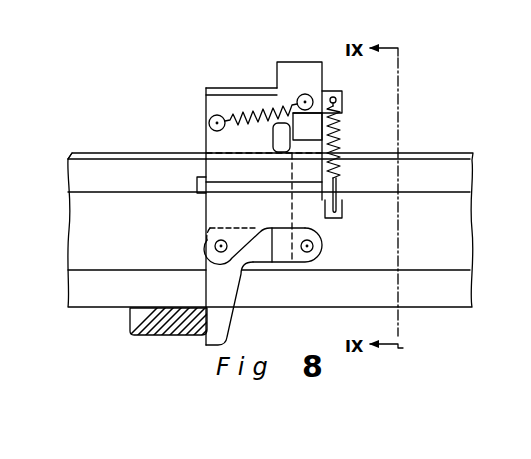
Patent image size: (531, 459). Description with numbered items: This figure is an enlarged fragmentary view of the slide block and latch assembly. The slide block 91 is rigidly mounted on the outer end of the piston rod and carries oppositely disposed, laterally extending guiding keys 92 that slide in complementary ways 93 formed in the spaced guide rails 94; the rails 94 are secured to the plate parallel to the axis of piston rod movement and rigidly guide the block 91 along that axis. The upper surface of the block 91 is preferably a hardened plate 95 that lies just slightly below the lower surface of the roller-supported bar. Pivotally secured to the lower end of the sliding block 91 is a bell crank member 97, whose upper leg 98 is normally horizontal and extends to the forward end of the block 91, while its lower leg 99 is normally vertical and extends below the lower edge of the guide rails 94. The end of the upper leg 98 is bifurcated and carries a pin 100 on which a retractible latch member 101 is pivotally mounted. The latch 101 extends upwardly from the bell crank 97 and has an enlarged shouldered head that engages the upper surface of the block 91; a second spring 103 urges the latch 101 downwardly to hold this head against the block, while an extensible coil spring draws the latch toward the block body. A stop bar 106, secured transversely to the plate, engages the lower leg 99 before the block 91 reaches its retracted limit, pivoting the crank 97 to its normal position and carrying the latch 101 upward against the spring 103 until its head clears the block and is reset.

The slide block 91 is at (207, 108).
The guiding keys 92 is at (223, 173).
The ways 93 is at (458, 173).
The guide rails 94 is at (453, 228).
The hardened plate 95 is at (250, 90).
The bell crank member 97 is at (204, 258).
The upper leg 98 is at (321, 262).
The lower leg 99 is at (229, 323).
The pin 100 is at (310, 245).
The retractible latch member 101 is at (303, 70).
The second spring 103 is at (338, 138).
The stop bar 106 is at (153, 331).